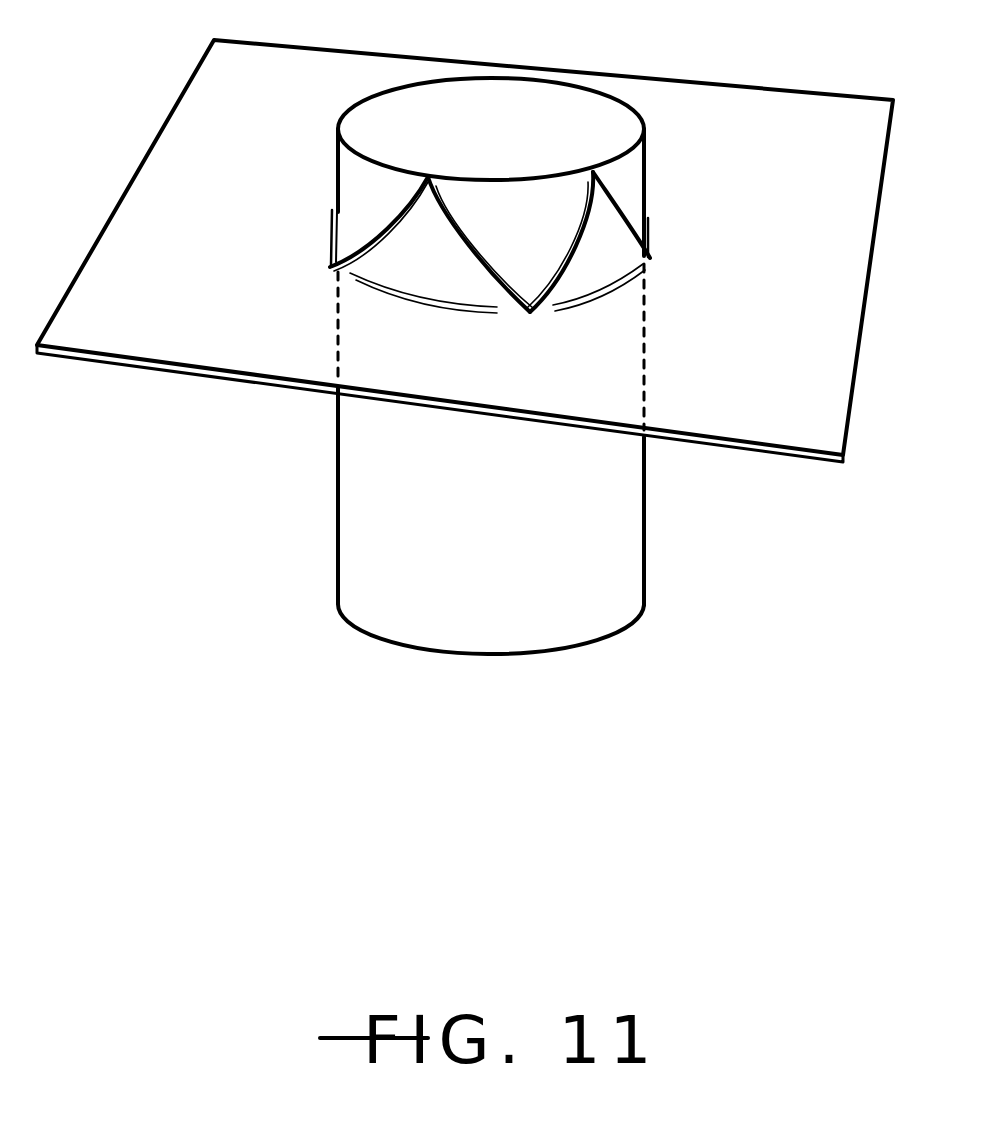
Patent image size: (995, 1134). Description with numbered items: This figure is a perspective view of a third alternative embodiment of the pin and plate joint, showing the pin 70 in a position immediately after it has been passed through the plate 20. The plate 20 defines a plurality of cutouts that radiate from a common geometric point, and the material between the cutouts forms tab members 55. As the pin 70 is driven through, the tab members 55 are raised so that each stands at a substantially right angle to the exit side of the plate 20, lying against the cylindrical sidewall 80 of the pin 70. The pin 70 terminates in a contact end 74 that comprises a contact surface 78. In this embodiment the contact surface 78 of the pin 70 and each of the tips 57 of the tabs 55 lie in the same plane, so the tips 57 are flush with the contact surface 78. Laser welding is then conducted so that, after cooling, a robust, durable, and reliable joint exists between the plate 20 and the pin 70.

The plate 20 is at (768, 417).
The pin 70 is at (328, 265).
The contact end 74 is at (475, 97).
The contact surface 78 is at (605, 118).
The tips 57 is at (593, 172).
The tab members 55 is at (457, 272).
The cylindrical sidewall 80 is at (520, 243).